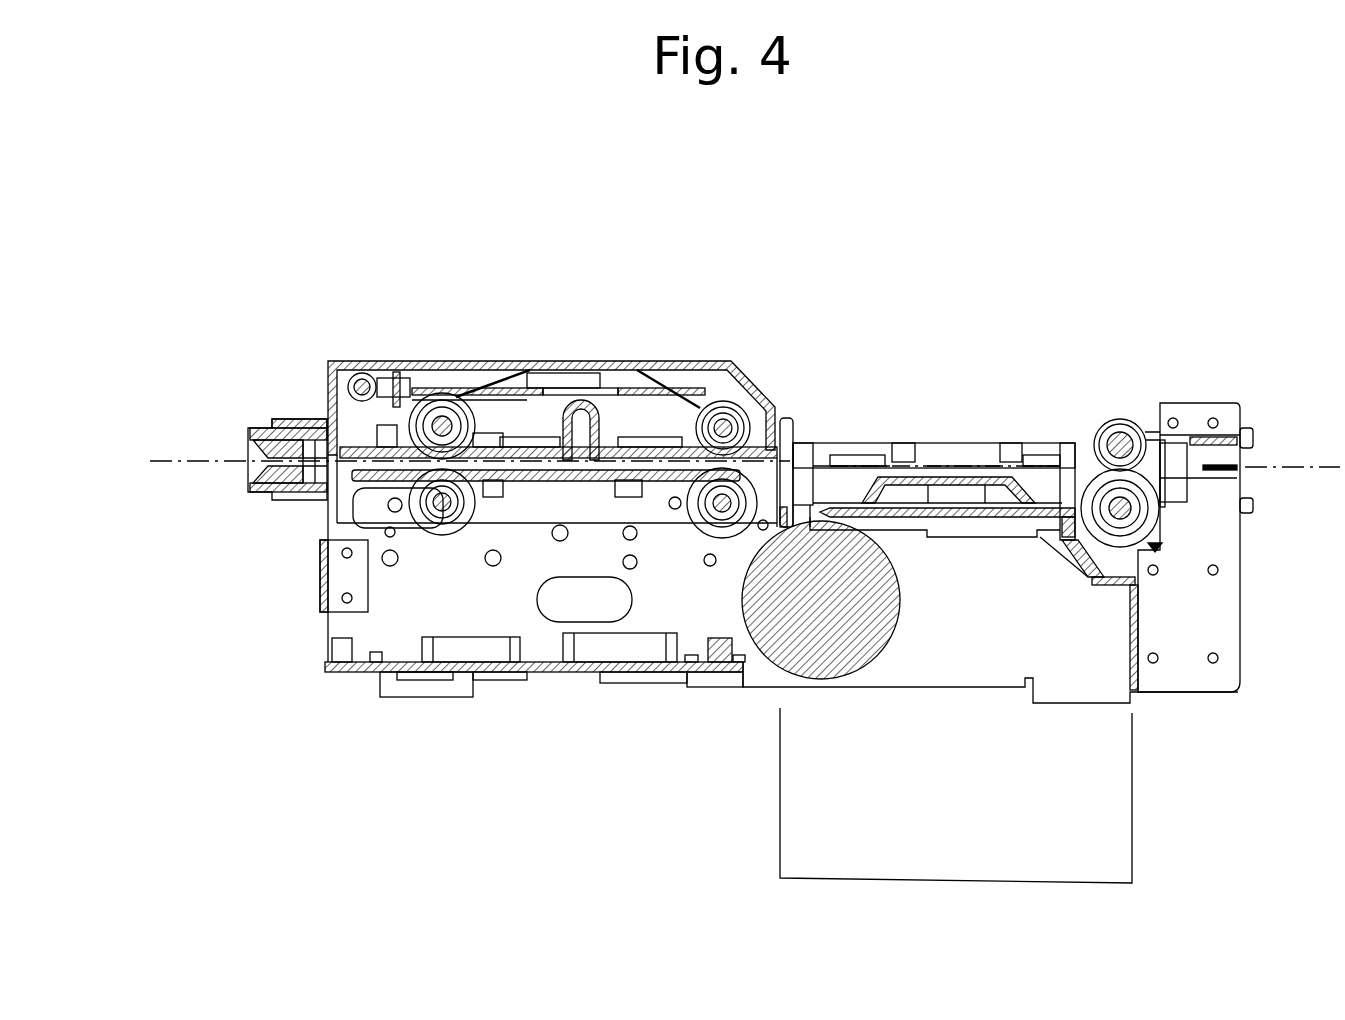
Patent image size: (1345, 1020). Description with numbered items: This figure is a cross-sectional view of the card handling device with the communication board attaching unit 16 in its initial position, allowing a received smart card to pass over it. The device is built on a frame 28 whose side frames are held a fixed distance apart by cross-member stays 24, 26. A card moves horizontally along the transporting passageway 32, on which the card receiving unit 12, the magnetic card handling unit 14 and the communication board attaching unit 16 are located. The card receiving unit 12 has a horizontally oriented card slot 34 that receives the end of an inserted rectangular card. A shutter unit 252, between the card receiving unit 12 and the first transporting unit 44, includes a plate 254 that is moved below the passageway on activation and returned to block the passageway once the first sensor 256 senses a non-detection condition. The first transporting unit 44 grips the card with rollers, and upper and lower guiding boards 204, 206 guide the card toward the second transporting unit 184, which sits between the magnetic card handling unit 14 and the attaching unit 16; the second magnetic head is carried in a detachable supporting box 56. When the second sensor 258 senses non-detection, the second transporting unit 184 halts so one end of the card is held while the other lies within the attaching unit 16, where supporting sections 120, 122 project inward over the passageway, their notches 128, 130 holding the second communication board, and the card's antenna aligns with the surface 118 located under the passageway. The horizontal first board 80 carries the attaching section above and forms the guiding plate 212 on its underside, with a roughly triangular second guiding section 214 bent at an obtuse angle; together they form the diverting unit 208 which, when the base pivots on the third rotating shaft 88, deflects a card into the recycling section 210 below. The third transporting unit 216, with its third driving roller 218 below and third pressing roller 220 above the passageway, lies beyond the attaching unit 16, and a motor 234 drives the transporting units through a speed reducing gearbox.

The magnetic card handling unit 14 is at (545, 203).
The communication board attaching unit 16 is at (937, 208).
The card receiving unit 12 is at (270, 423).
The card slot 34 is at (245, 465).
The first sensor 256 is at (385, 432).
The first transporting unit 44 is at (437, 340).
The guiding board 204 is at (488, 440).
The second sensor 258 is at (585, 388).
The detachable supporting box 56 is at (628, 440).
The second transporting unit 184 is at (727, 342).
The transporting passageway 32 is at (832, 445).
The supporting section 120 is at (880, 445).
The notch 128 is at (900, 445).
The surface 118 is at (967, 470).
The notch 130 is at (1010, 445).
The supporting section 122 is at (1030, 445).
The third transporting unit 216 is at (1147, 333).
The third pressing roller 220 is at (1125, 414).
The third rotating shaft 88 is at (1147, 493).
The third driving roller 218 is at (1163, 552).
The cross-member stay 26 is at (1138, 668).
The second guiding section 214 is at (1028, 548).
The guiding plate 212 is at (975, 530).
The first board 80 is at (985, 522).
The diverting unit 208 is at (992, 672).
The recycling section 210 is at (778, 793).
The motor 234 is at (790, 665).
The guiding board 206 is at (522, 500).
The frame 28 is at (571, 778).
The cross-member stay 24 is at (318, 602).
The shutter unit 252 is at (208, 570).
The plate 254 is at (342, 488).